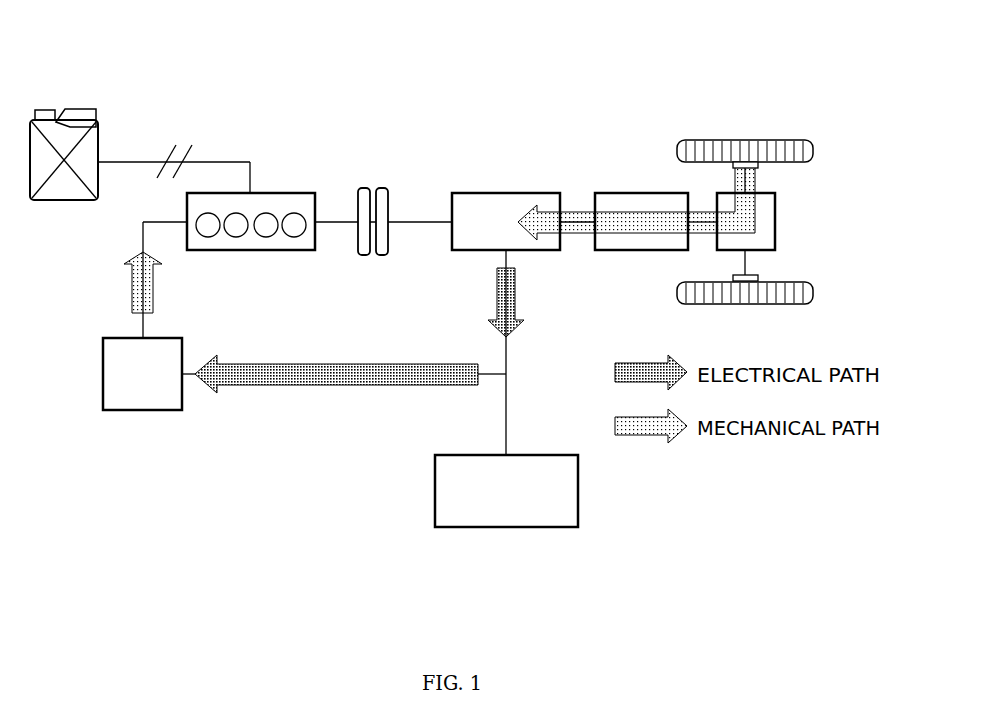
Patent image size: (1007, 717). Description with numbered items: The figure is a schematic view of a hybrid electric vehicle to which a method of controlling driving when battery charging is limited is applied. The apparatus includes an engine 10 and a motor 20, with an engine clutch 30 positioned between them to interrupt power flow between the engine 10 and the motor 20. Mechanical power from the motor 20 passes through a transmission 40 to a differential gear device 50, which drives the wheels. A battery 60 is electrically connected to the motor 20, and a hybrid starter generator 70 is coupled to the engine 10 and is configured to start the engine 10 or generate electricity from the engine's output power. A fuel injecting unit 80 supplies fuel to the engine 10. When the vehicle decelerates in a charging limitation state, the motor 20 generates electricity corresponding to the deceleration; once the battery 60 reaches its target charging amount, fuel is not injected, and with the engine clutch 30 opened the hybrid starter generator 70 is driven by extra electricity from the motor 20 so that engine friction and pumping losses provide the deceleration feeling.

The engine 10 is at (296, 193).
The motor 20 is at (505, 193).
The engine clutch 30 is at (380, 188).
The transmission 40 is at (640, 193).
The differential gear device 50 is at (775, 218).
The battery 60 is at (505, 527).
The hybrid starter generator (HSG) 70 is at (143, 410).
The fuel injecting unit 80 is at (79, 108).